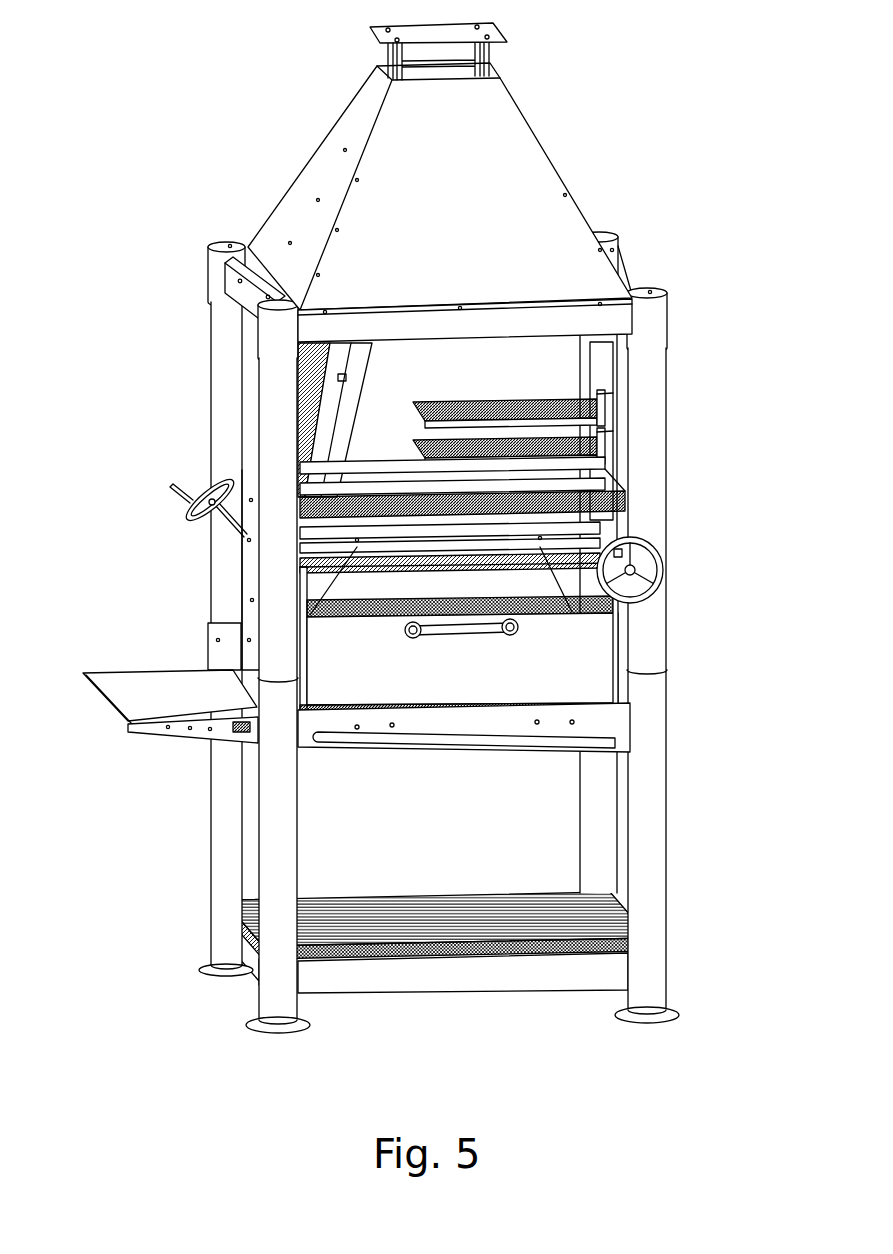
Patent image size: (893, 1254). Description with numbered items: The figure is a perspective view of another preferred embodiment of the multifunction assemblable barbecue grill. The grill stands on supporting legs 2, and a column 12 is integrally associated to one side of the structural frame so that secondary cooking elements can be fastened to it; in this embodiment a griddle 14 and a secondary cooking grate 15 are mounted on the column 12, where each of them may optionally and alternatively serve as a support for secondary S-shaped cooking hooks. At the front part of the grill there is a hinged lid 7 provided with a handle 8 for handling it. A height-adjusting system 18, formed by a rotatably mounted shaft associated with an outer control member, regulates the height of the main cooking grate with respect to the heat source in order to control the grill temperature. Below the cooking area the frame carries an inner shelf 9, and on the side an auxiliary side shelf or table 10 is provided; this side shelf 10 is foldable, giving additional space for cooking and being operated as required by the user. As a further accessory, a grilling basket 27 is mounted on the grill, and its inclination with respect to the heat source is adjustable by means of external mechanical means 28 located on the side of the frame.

The supporting legs 2 is at (647, 820).
The lid 7 is at (580, 660).
The handle 8 is at (480, 637).
The inner shelf 9 is at (490, 917).
The auxiliary side shelf or table 10 is at (140, 687).
The column 12 is at (600, 472).
The griddle 14 is at (580, 450).
The secondary cooking grate 15 is at (560, 413).
The height-adjusting system 18 is at (667, 557).
The grilling basket 27 is at (290, 465).
The mechanical means for grilling basket inclination 28 is at (180, 527).